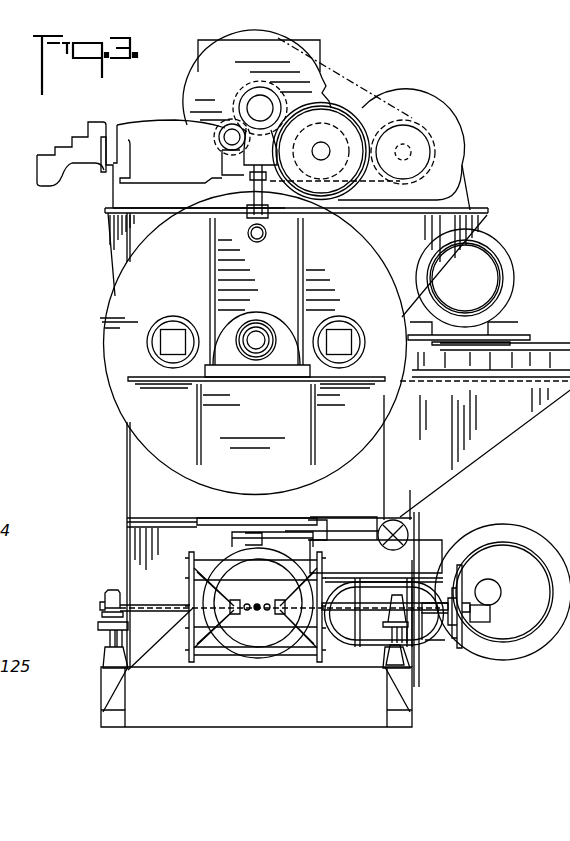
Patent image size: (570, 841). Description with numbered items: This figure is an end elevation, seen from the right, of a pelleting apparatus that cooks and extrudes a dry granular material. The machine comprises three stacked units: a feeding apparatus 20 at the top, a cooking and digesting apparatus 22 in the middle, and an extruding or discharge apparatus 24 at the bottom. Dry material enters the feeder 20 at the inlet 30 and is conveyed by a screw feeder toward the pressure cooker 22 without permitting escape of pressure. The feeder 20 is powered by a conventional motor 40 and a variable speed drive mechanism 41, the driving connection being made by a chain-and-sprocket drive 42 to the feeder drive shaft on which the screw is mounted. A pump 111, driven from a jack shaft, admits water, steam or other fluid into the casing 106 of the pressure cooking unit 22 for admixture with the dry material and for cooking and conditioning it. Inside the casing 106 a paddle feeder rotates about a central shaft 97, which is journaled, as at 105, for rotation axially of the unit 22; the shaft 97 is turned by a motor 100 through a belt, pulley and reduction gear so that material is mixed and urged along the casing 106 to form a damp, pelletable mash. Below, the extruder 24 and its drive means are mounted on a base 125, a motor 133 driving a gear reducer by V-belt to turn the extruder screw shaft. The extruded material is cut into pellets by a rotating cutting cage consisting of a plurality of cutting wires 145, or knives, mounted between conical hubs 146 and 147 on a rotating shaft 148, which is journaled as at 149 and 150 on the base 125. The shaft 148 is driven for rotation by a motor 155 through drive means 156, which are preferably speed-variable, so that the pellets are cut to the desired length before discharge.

The feeding apparatus 20 is at (191, 41).
The cooking and digesting apparatus 22 is at (116, 434).
The extruding or discharge apparatus 24 is at (116, 557).
The inlet 30 is at (222, 42).
The motor 40 is at (337, 128).
The variable speed drive mechanism 41 is at (437, 120).
The chain-and-sprocket drive 42 is at (266, 55).
The shaft 97 is at (262, 345).
The motor 100 is at (512, 280).
The journal 105 is at (258, 318).
The casing 106 is at (118, 294).
The pump 111 is at (128, 128).
The base 125 is at (195, 693).
The motor 133 is at (508, 522).
The cutting wires 145 is at (270, 645).
The conical hub 146 is at (183, 618).
The conical hub 147 is at (300, 640).
The rotating shaft 148 is at (150, 600).
The journal 149 is at (112, 592).
The journal 150 is at (395, 595).
The motor 155 is at (435, 642).
The drive means 156 is at (470, 645).